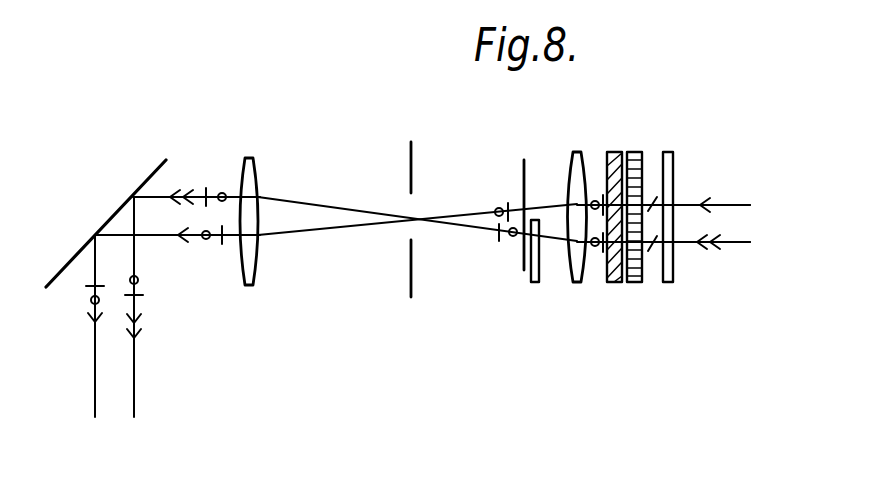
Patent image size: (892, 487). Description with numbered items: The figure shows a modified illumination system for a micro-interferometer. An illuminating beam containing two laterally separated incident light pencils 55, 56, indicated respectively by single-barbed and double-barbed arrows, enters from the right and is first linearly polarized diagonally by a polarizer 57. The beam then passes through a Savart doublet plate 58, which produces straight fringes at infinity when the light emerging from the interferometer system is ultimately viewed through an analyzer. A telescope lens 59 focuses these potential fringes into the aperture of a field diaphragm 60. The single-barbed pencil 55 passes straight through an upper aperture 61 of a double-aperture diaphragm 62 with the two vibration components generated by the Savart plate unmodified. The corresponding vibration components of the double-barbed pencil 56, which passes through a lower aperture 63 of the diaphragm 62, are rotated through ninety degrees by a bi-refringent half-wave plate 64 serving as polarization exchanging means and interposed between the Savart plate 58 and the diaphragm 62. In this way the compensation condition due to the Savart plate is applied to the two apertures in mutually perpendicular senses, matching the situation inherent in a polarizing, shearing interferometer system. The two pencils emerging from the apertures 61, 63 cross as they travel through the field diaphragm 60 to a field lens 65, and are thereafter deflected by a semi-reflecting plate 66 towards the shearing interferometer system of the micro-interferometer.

The incident light pencil 55 is at (743, 204).
The incident light pencil 56 is at (739, 250).
The polarizer 57 is at (670, 152).
The Savart doublet plate 58 is at (619, 283).
The telescope lens 59 is at (582, 275).
The field diaphragm 60 is at (410, 158).
The upper aperture 61 is at (511, 205).
The double-aperture diaphragm 62 is at (524, 172).
The lower aperture 63 is at (520, 236).
The bi-refringent half-wave plate 64 is at (537, 283).
The field lens 65 is at (252, 163).
The semi-reflecting plate 66 is at (161, 164).